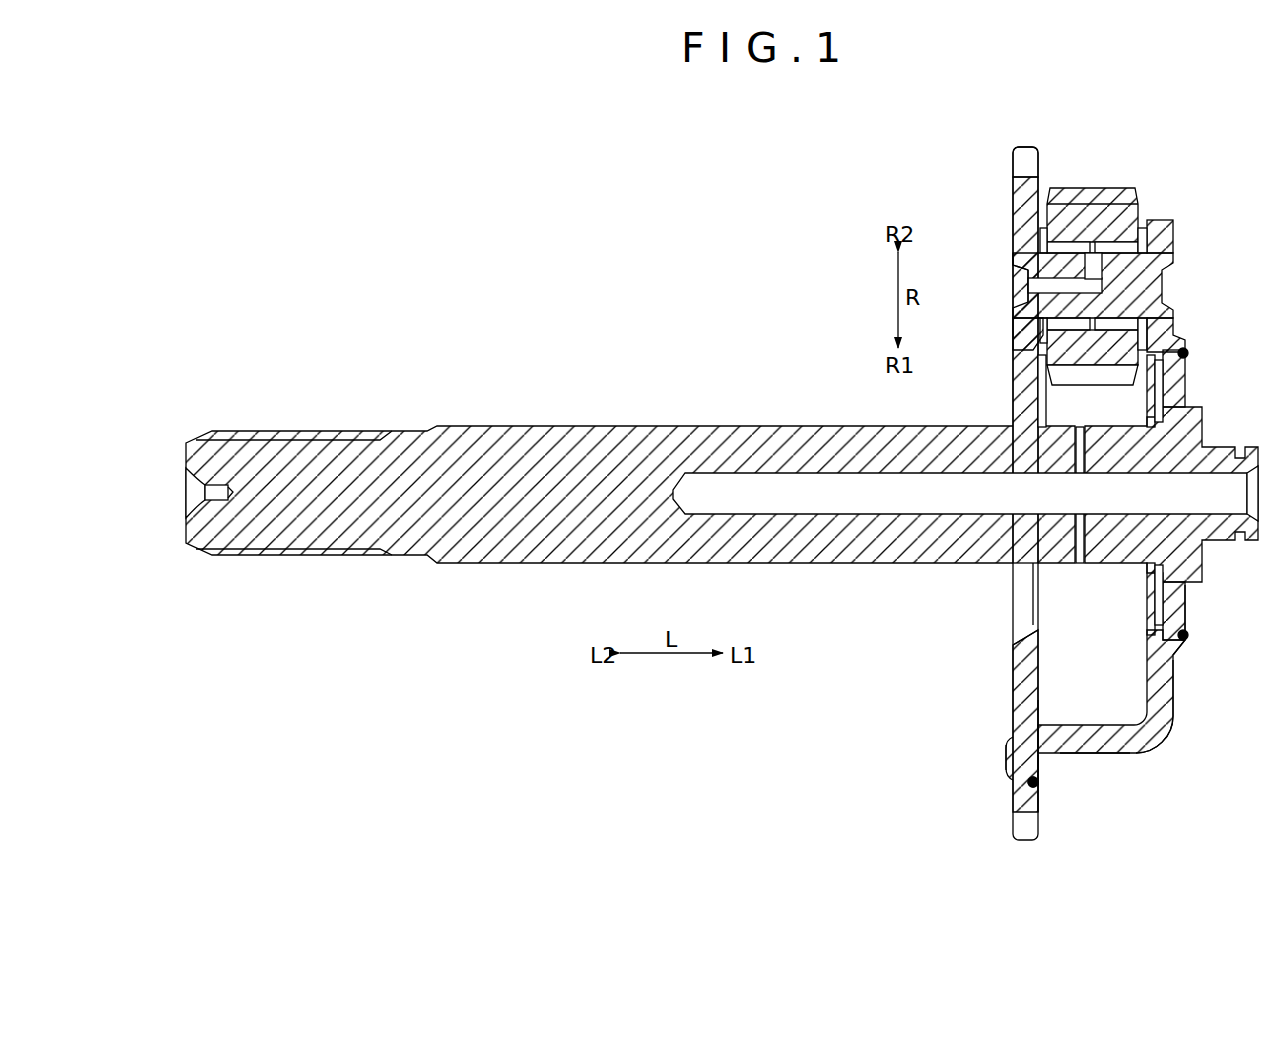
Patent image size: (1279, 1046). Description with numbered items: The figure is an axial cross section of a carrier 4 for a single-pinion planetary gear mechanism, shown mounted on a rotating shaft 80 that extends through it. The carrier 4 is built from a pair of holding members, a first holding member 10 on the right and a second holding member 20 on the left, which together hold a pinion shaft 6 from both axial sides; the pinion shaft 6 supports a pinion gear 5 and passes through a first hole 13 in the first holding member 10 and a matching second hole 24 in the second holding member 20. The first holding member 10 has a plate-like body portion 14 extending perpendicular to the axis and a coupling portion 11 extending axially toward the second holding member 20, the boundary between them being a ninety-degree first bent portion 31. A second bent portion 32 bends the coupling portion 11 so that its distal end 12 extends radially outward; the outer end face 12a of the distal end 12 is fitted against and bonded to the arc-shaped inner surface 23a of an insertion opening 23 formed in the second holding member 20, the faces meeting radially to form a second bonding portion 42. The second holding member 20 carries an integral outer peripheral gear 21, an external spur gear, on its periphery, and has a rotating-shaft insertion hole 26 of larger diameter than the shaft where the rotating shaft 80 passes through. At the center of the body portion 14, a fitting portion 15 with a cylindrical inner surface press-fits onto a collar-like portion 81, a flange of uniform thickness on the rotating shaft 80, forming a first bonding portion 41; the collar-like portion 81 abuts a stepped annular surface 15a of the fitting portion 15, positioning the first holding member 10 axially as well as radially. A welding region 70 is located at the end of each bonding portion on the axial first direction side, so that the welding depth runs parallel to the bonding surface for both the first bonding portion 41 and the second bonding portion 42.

The carrier 4 is at (1180, 212).
The pinion gear 5 is at (1087, 190).
The pinion shaft 6 is at (1018, 262).
The first holding member 10 is at (1177, 712).
The coupling portion 11 is at (1100, 752).
The distal end 12 is at (1006, 760).
The outer end face 12a is at (1030, 784).
The first hole 13 is at (1165, 268).
The body portion 14 is at (1145, 672).
The fitting portion 15 is at (1178, 328).
The annular surface 15a is at (1186, 357).
The second holding member 20 is at (1010, 672).
The outer peripheral gear 21 is at (1025, 147).
The insertion opening 23 is at (1030, 720).
The inner surface 23a is at (1036, 765).
The second hole 24 is at (1018, 302).
The rotating-shaft insertion hole 26 is at (1025, 358).
The first bent portion 31 is at (1170, 742).
The second bent portion 32 is at (1020, 733).
The first bonding portion 41 is at (1190, 645).
The second bonding portion 42 is at (1003, 783).
The welding region 70 is at (1188, 635).
The rotating shaft 80 is at (647, 426).
The collar-like portion 81 is at (1188, 598).